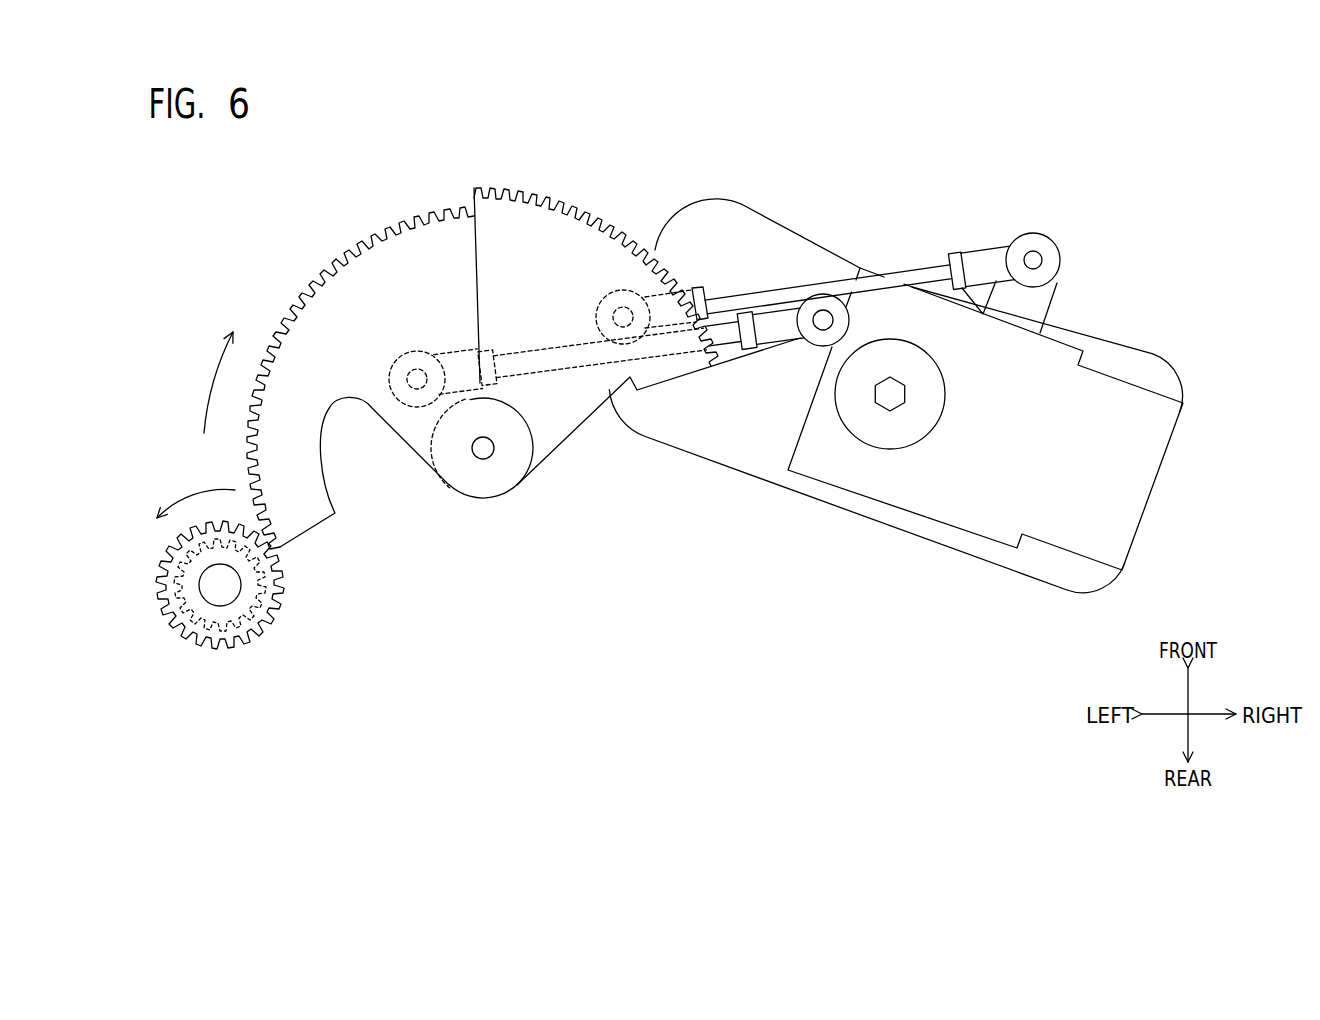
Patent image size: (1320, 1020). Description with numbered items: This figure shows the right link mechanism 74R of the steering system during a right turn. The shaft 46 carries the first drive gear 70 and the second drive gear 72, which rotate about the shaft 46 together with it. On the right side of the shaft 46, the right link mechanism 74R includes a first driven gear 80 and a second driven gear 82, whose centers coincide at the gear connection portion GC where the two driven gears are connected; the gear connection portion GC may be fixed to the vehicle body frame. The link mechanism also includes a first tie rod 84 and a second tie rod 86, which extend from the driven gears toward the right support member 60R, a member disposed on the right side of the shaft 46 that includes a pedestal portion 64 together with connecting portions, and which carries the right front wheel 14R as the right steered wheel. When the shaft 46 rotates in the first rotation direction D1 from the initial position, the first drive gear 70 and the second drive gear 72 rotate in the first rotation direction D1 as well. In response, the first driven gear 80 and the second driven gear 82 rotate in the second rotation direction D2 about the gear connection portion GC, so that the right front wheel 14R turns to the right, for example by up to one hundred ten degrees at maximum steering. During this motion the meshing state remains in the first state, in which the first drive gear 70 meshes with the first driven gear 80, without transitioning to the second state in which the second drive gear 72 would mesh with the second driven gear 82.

The right link mechanism 74R is at (600, 146).
The second tie rod 86 is at (866, 275).
The right support member 60R is at (1139, 309).
The first tie rod 84 is at (737, 336).
The first driven gear 80 is at (408, 421).
The second driven gear 82 is at (562, 421).
The gear connection portion GC is at (483, 459).
The right front wheel 14R is at (727, 459).
The pedestal portion 64 is at (1138, 483).
The first drive gear 70 is at (165, 603).
The second drive gear 72 is at (178, 548).
The shaft 46 is at (226, 598).
The first rotation direction D1 is at (196, 492).
The second rotation direction D2 is at (207, 382).